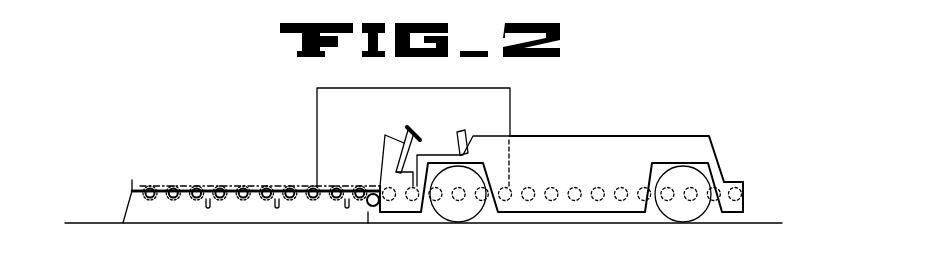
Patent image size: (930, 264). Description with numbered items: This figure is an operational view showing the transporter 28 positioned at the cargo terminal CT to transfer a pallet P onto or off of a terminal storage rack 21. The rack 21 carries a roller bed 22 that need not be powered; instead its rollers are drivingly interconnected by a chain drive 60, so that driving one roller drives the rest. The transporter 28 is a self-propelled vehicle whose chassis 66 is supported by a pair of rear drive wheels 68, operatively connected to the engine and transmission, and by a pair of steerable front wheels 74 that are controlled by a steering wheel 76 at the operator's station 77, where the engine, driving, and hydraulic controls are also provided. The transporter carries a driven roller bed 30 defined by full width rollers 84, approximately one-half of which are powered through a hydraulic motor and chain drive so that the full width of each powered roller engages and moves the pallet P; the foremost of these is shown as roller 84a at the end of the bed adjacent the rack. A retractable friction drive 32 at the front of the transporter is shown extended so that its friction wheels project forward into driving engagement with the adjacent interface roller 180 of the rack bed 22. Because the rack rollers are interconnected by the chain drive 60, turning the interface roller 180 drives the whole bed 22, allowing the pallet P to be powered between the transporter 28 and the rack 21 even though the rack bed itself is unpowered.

The terminal storage rack 21 is at (126, 204).
The roller bed 22 is at (172, 187).
The chain drive 60 is at (187, 185).
The cargo terminal CT is at (183, 155).
The interface roller 180 is at (358, 185).
The friction drive 32 is at (364, 214).
The pallet P is at (317, 107).
The transporter 28 is at (649, 100).
The operator's station 77 is at (444, 130).
The steering wheel 76 is at (413, 128).
The front wheels 74 is at (462, 217).
The rear drive wheels 68 is at (685, 215).
The chassis 66 is at (748, 200).
The first vehicle roller 84a is at (395, 199).
The full width rollers 84 is at (554, 186).
The driven roller bed 30 is at (580, 186).